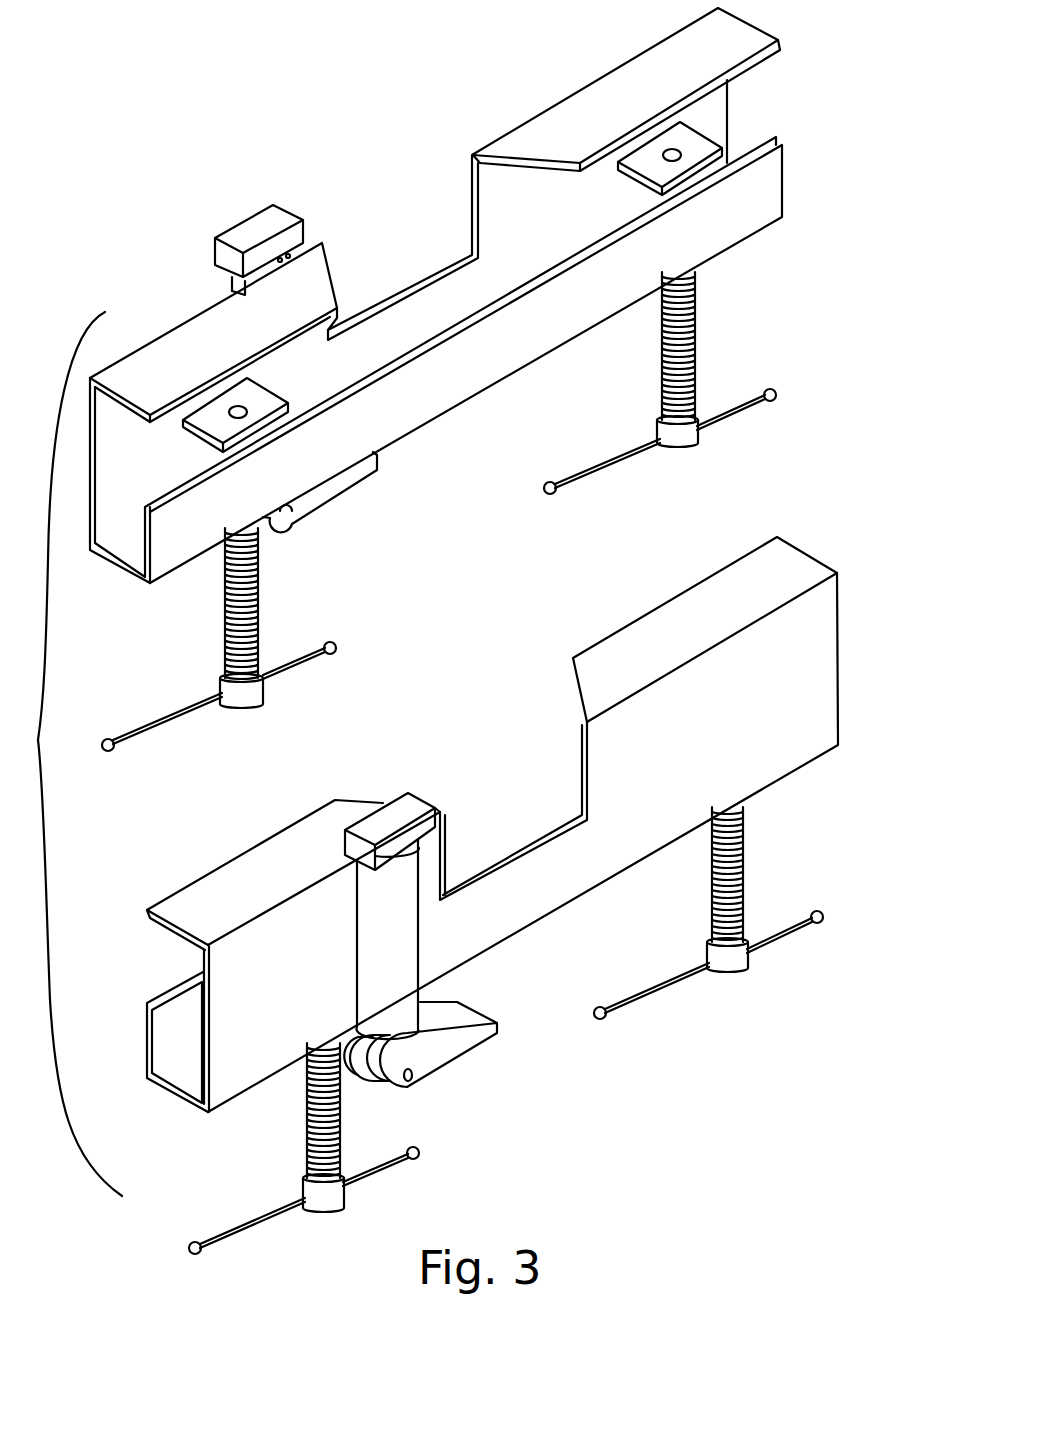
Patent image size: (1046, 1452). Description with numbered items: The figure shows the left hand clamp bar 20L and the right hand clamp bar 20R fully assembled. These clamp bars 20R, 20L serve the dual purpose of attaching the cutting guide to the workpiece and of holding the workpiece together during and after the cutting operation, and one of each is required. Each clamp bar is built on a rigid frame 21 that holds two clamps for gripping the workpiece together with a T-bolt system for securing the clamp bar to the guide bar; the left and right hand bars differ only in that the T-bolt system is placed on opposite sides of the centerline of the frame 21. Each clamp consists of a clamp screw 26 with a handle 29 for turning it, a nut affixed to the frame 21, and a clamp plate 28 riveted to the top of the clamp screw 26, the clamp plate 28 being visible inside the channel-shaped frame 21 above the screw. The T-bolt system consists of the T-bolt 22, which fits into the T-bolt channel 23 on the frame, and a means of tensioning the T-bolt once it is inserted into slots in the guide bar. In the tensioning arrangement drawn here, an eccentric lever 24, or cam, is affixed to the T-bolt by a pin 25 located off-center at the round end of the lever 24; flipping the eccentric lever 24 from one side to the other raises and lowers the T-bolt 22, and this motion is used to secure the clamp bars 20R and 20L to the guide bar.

The right hand clamp bar 20R is at (788, 180).
The left hand clamp bar 20L is at (832, 553).
The rigid frame 21 is at (513, 348).
The T-bolt 22 is at (245, 230).
The T-bolt channel 23 is at (230, 285).
The eccentric lever 24 is at (310, 498).
The pin 25 is at (412, 1077).
The clamp screw 26 is at (695, 360).
The clamp plate 28 is at (690, 145).
The handle 29 is at (575, 480).